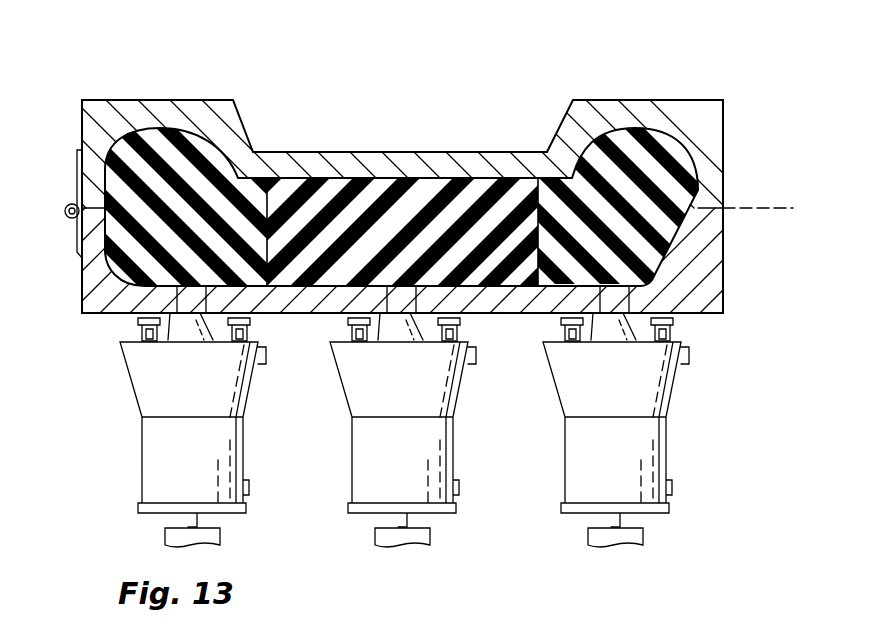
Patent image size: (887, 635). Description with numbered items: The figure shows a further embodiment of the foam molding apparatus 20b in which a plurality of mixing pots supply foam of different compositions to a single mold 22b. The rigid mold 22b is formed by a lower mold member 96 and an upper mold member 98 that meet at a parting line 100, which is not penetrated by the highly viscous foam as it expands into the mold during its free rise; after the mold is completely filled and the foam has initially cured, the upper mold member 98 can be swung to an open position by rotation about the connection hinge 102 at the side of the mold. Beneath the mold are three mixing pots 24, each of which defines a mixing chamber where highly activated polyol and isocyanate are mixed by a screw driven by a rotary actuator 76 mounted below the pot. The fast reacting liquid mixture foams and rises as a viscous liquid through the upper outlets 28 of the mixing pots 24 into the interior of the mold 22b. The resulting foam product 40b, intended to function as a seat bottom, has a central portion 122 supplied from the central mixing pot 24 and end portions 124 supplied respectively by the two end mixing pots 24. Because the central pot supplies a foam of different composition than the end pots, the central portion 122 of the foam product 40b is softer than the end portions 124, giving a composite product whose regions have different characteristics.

The mold 22b is at (404, 175).
The upper mold member 98 is at (724, 162).
The lower mold member 96 is at (724, 294).
The parting line 100 is at (783, 209).
The connection hinge 102 is at (66, 220).
The foam product 40b is at (422, 179).
The end portions 124 is at (167, 145).
The central portion 122 is at (350, 182).
The apparatus 20b is at (416, 431).
The mixing pot 24 is at (246, 454).
The rotary actuator 76 is at (220, 531).
The upper outlet 28 is at (165, 313).